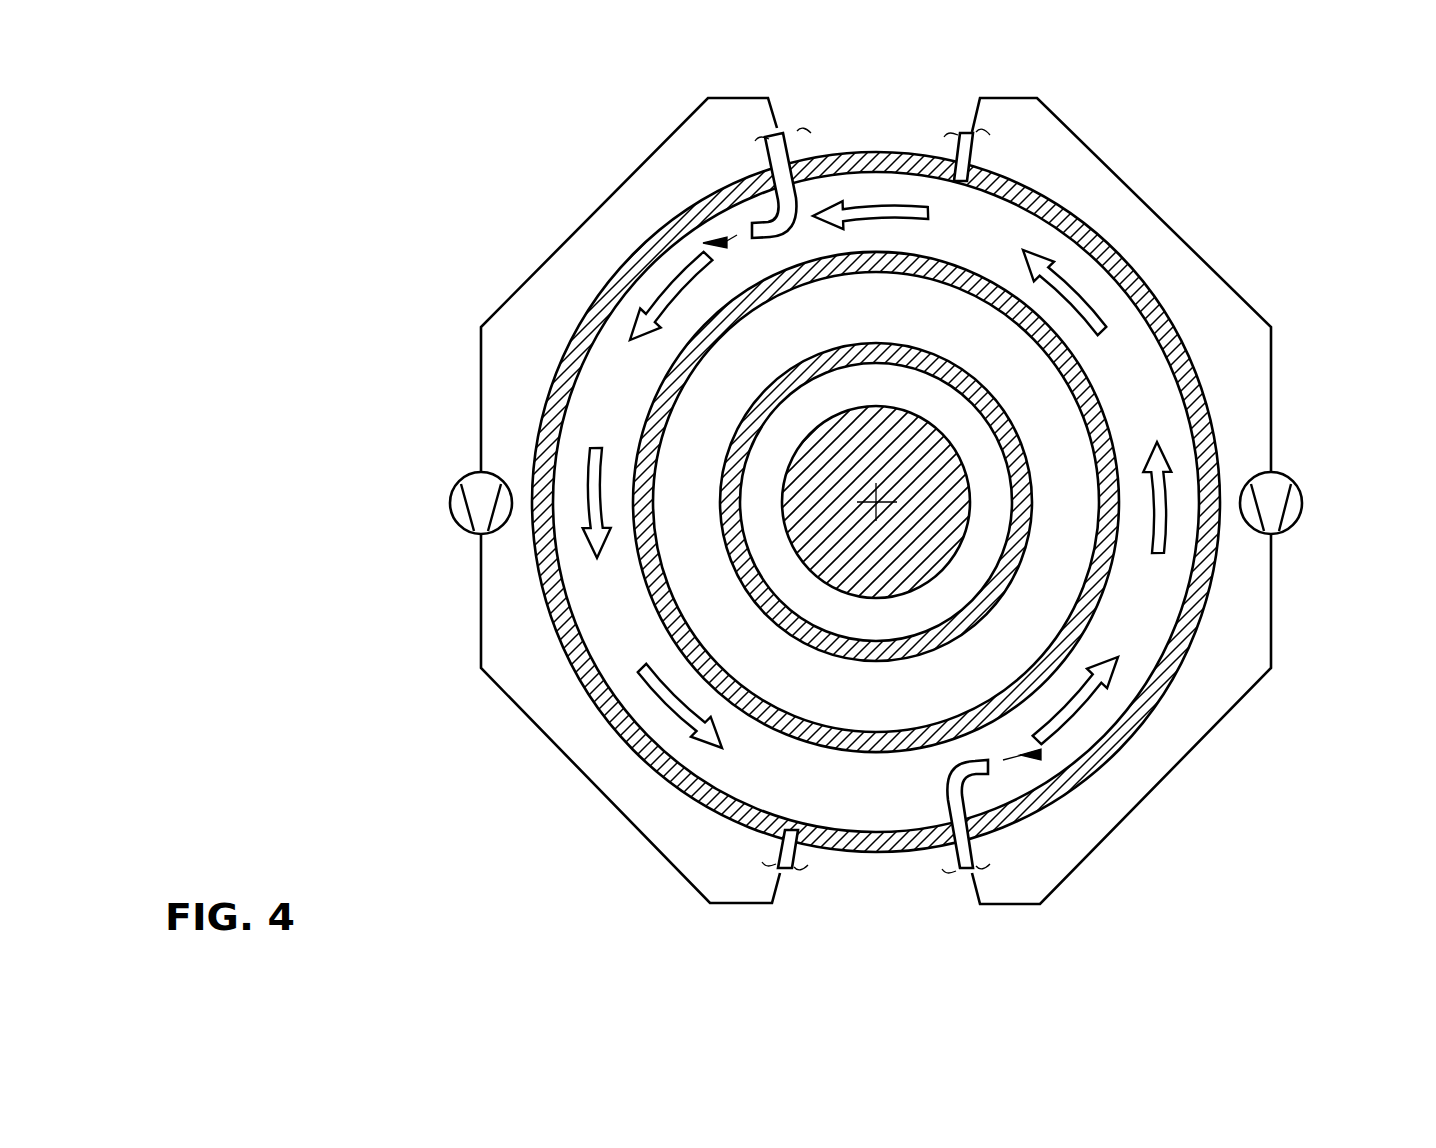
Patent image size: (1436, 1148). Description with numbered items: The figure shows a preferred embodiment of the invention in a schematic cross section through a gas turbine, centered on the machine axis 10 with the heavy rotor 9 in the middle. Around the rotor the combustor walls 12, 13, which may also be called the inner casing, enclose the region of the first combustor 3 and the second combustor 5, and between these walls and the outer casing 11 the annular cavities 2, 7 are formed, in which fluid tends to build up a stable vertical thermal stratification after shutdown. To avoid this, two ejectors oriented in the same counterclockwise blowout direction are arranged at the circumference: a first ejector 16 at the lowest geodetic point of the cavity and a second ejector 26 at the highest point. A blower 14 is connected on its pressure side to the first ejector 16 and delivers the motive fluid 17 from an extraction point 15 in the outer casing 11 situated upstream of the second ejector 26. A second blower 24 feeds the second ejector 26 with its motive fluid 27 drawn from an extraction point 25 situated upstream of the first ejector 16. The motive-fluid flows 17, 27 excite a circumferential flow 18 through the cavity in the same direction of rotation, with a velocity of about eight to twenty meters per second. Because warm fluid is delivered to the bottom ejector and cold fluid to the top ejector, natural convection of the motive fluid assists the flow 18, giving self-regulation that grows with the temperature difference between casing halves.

The plenum 2 is at (846, 807).
The first combustor 3 is at (846, 707).
The second combustor 5 is at (886, 707).
The annular cavity 7 is at (886, 807).
The rotor 9 is at (943, 430).
The machine axis 10 is at (882, 502).
The outer casing 11 is at (587, 312).
The combustor wall 12 is at (740, 558).
The combustor wall 13 is at (660, 618).
The blower 14 is at (1293, 522).
The extraction point 15 is at (965, 157).
The first ejector 16 is at (965, 848).
The motive-fluid flow 17 is at (1003, 760).
The circumferential flow 18 is at (677, 283).
The second blower 24 is at (465, 482).
The extraction point 25 is at (785, 843).
The second ejector 26 is at (790, 177).
The motive-fluid flow 27 is at (737, 235).